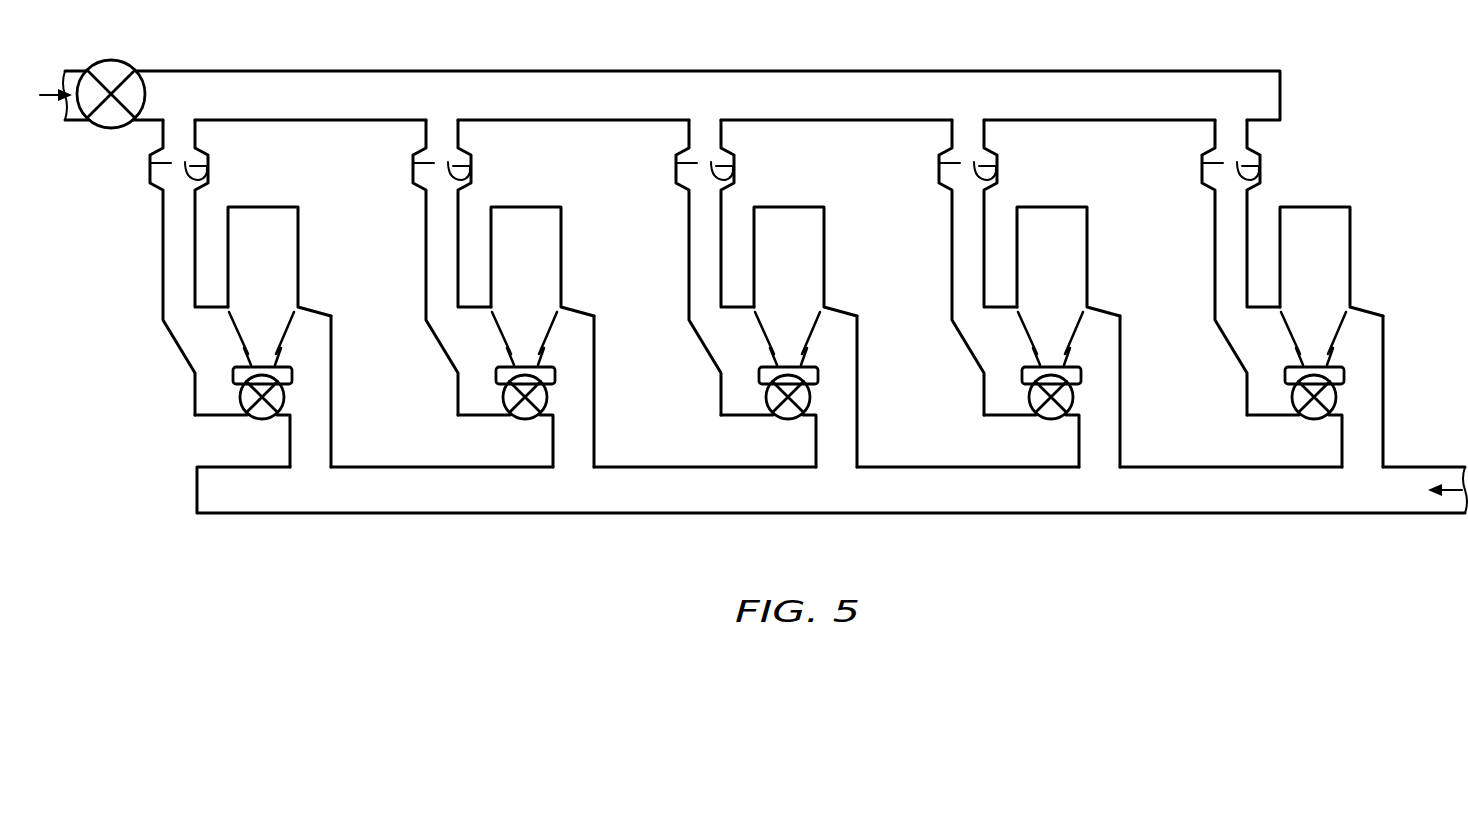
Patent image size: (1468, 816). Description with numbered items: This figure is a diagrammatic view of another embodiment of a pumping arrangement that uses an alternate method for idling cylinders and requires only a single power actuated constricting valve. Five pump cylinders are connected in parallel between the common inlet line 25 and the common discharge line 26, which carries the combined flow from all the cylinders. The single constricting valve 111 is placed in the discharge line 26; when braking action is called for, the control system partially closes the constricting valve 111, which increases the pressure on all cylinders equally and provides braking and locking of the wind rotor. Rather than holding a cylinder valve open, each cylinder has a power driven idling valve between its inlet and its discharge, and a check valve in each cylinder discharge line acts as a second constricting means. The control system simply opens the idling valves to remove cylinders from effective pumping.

The discharge line 26 is at (627, 71).
The constricting valve 111 is at (125, 63).
The inlet line 25 is at (818, 512).